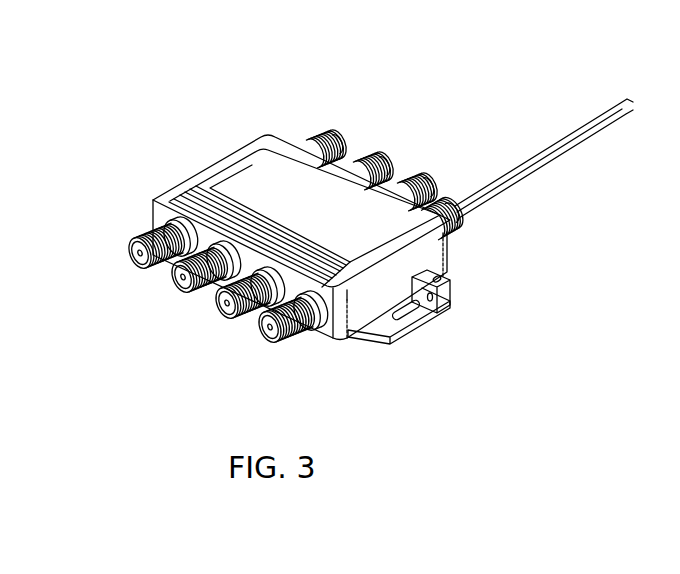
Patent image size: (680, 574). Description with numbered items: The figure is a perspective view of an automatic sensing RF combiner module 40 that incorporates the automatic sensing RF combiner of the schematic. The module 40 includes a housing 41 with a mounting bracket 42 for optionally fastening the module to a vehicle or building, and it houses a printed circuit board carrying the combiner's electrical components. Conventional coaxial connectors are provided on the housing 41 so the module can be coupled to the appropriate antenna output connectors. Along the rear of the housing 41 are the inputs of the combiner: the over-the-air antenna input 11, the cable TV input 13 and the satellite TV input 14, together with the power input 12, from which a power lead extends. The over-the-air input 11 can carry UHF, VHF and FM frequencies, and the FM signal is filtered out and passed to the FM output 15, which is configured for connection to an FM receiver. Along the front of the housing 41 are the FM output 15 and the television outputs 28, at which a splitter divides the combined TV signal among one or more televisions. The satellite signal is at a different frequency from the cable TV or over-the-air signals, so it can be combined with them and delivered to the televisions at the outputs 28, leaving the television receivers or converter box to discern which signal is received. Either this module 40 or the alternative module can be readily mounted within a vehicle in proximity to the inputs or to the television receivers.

The over-the-air antenna input 11 is at (465, 145).
The power input 12 is at (478, 214).
The cable TV input 13 is at (393, 117).
The satellite TV input 14 is at (347, 85).
The FM output 15 is at (312, 338).
The television output 28 is at (116, 232).
The module 40 is at (447, 258).
The housing 41 is at (273, 168).
The mounting bracket 42 is at (407, 323).